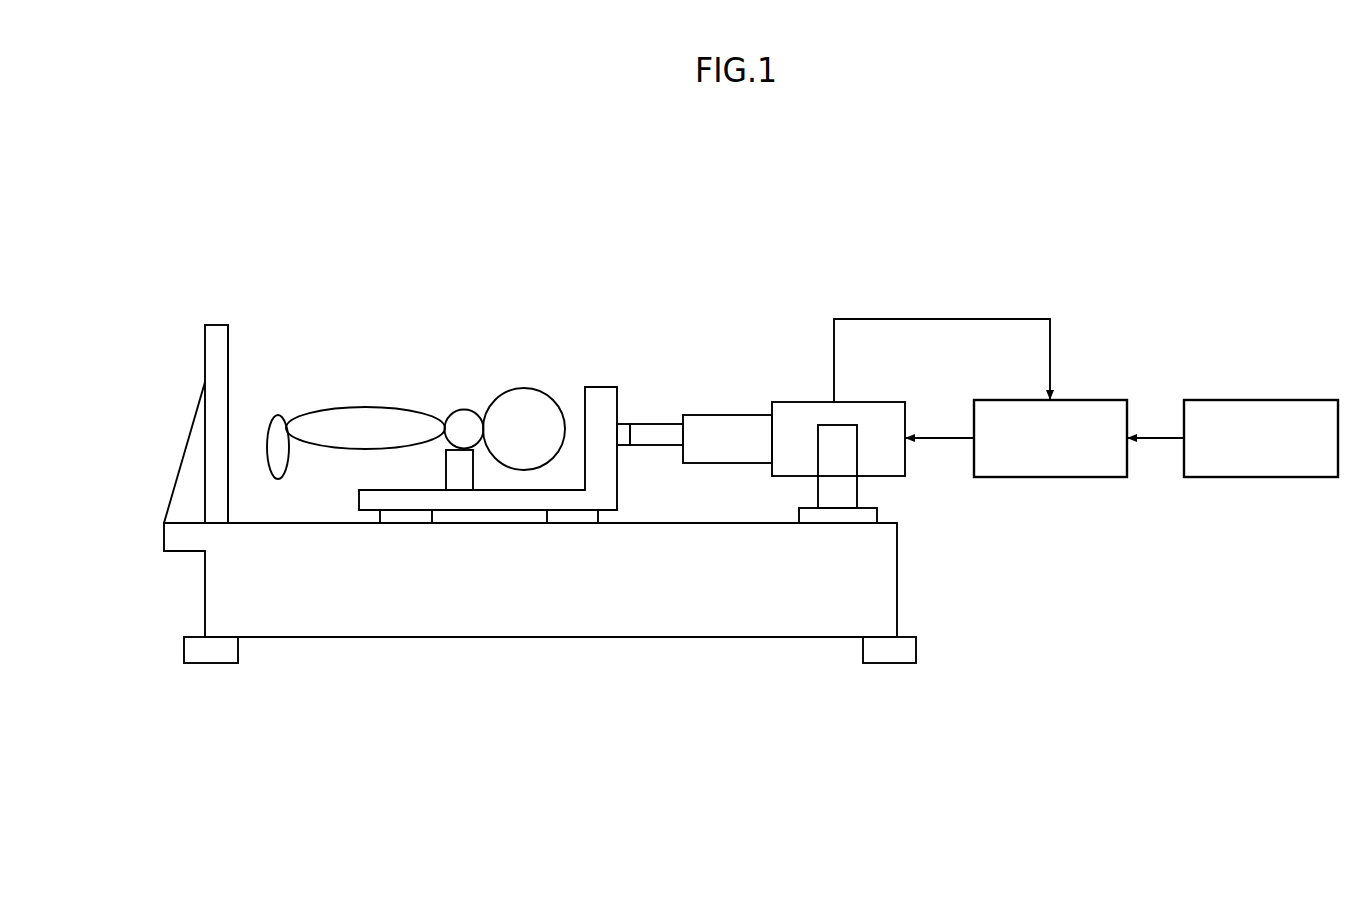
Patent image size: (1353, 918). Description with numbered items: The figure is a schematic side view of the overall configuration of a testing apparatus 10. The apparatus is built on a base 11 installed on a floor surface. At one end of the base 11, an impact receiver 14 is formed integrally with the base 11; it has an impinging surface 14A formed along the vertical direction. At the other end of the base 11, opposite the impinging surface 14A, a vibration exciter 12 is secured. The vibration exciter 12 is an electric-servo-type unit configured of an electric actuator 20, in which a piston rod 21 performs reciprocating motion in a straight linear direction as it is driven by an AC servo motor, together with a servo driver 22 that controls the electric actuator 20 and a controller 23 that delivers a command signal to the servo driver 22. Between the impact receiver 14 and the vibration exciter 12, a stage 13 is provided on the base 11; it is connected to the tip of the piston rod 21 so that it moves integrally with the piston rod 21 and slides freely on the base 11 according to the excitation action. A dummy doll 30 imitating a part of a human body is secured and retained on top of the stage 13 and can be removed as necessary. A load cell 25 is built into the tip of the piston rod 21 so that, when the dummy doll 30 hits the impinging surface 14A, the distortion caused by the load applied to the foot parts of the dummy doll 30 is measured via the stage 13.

The testing apparatus 10 is at (1023, 206).
The base 11 is at (897, 577).
The vibration exciter 12 is at (821, 302).
The stage 13 is at (617, 495).
The impact receiver 14 is at (212, 324).
The impinging surface 14A is at (236, 328).
The electric actuator 20 is at (790, 402).
The piston rod 21 is at (664, 424).
The servo driver 22 is at (1052, 480).
The controller 23 is at (1263, 480).
The load cell 25 is at (624, 424).
The dummy doll 30 is at (366, 407).